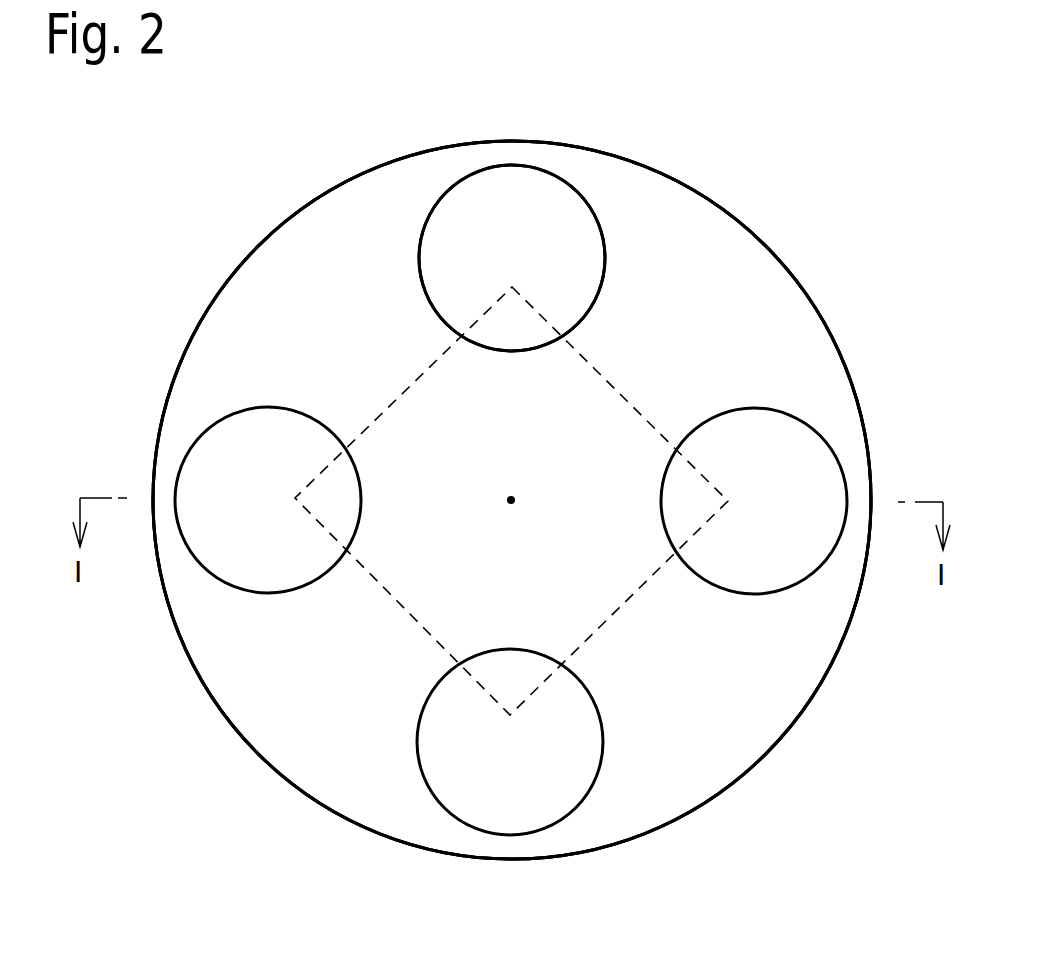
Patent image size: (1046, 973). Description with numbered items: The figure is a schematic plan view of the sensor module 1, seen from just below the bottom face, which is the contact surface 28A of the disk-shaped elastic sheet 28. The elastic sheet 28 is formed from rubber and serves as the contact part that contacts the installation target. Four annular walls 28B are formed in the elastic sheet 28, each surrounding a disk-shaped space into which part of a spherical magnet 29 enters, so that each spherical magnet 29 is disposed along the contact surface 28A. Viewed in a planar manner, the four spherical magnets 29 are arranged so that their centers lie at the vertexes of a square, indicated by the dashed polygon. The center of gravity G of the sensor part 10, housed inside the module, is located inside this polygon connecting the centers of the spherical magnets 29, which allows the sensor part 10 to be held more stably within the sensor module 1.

The sensor module 1 is at (790, 127).
The elastic sheet 28 is at (758, 293).
The contact surface 28A is at (512, 500).
The annular wall 28B is at (433, 216).
The spherical magnet 29 is at (528, 202).
The sensor part 10 is at (377, 587).
The center of gravity G is at (510, 500).